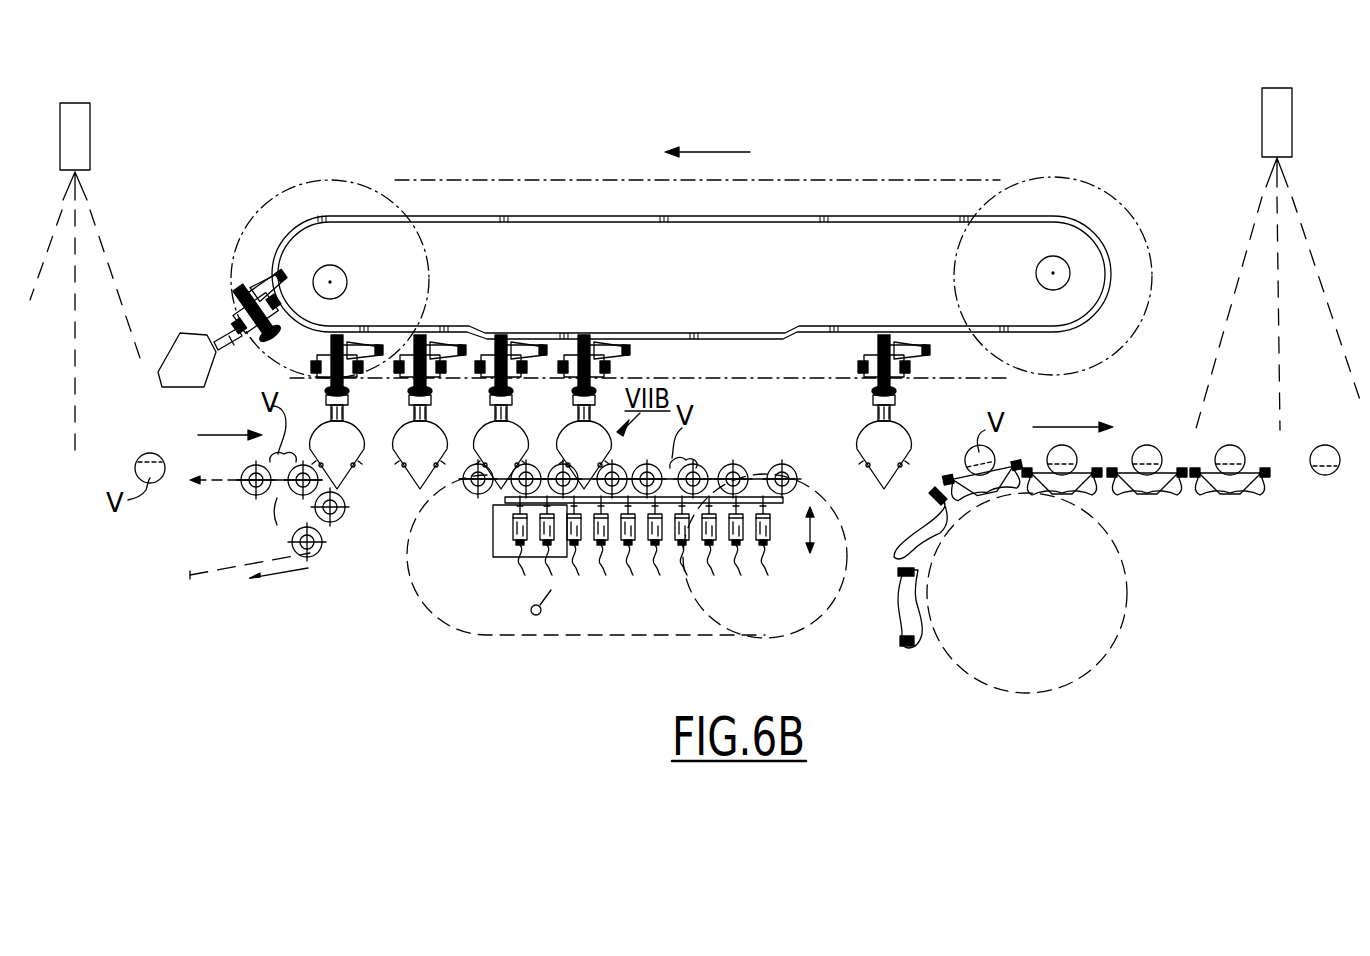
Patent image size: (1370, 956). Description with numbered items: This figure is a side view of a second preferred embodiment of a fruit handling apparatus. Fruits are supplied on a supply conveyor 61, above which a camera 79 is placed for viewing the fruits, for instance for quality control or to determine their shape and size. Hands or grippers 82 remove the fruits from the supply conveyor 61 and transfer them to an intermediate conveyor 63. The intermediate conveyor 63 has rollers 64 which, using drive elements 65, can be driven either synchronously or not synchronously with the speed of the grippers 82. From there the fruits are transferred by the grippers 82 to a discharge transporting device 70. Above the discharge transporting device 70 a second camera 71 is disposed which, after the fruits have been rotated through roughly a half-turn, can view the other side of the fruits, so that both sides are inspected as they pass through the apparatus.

The camera 79 is at (75, 120).
The camera 71 is at (1275, 115).
The grippers 82 is at (352, 440).
The rollers 64 is at (540, 462).
The drive elements 65 is at (514, 525).
The intermediate conveyor 63 is at (622, 635).
The supply conveyor 61 is at (183, 555).
The discharge transporting device 70 is at (1128, 540).